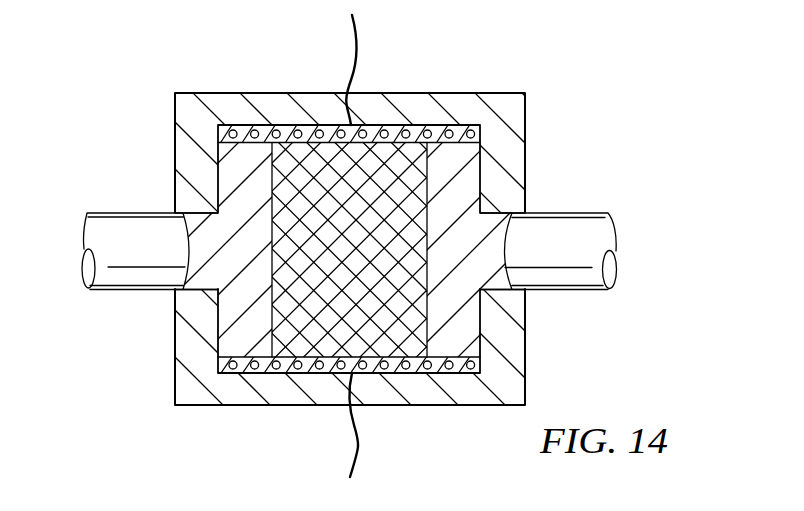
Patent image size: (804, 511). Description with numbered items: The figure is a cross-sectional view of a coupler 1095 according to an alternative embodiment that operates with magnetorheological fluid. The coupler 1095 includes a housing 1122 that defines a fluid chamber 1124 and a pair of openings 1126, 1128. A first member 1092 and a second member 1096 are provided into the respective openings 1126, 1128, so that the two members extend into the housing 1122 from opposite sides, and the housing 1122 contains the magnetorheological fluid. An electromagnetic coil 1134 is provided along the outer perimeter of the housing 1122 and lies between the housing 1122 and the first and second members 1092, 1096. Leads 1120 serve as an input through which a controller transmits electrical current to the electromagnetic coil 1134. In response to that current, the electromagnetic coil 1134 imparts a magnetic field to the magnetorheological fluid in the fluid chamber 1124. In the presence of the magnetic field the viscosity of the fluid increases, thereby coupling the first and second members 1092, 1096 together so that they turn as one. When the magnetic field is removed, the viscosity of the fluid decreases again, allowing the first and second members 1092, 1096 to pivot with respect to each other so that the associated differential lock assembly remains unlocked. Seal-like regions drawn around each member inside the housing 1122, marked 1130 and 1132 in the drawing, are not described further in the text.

The coupler 1095 is at (224, 74).
The leads 1120 is at (349, 32).
The electromagnetic coil 1134 is at (392, 128).
The housing 1122 is at (185, 106).
The second seal 1132 is at (452, 180).
The opening 1128 is at (165, 206).
The first member 1092 is at (592, 212).
The fluid chamber 1124 is at (375, 264).
The second member 1096 is at (112, 292).
The first seal 1130 is at (245, 304).
The opening 1126 is at (531, 297).